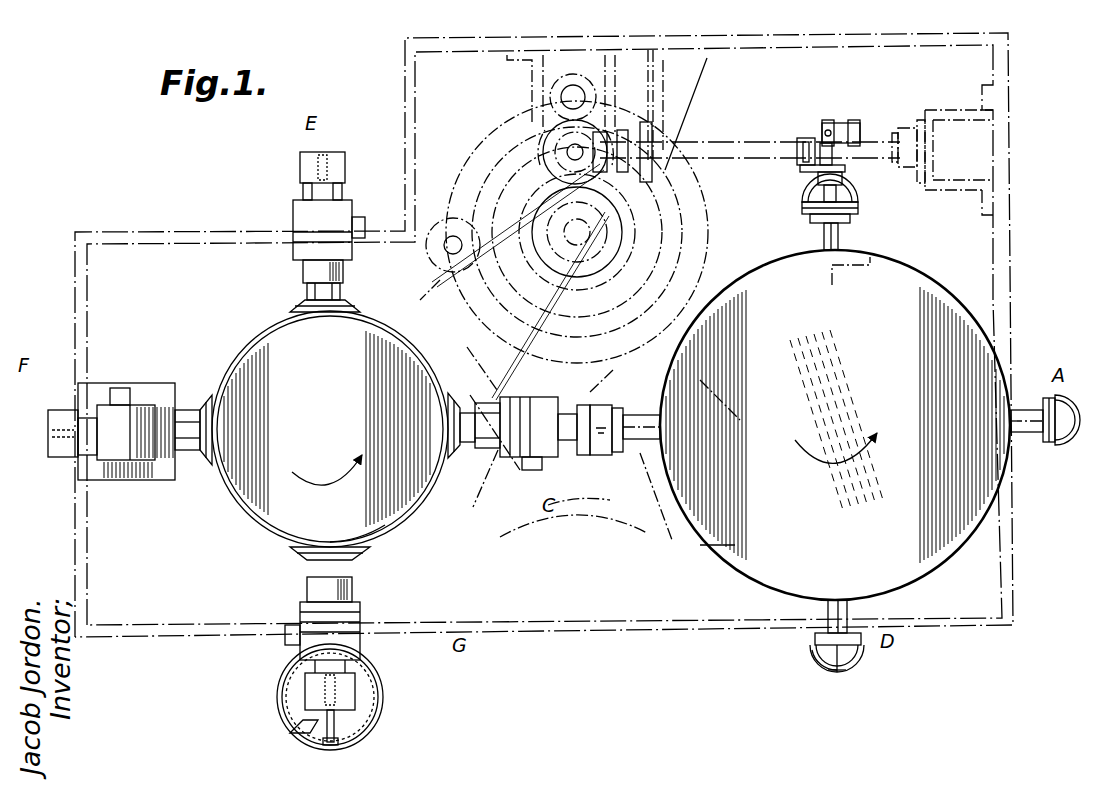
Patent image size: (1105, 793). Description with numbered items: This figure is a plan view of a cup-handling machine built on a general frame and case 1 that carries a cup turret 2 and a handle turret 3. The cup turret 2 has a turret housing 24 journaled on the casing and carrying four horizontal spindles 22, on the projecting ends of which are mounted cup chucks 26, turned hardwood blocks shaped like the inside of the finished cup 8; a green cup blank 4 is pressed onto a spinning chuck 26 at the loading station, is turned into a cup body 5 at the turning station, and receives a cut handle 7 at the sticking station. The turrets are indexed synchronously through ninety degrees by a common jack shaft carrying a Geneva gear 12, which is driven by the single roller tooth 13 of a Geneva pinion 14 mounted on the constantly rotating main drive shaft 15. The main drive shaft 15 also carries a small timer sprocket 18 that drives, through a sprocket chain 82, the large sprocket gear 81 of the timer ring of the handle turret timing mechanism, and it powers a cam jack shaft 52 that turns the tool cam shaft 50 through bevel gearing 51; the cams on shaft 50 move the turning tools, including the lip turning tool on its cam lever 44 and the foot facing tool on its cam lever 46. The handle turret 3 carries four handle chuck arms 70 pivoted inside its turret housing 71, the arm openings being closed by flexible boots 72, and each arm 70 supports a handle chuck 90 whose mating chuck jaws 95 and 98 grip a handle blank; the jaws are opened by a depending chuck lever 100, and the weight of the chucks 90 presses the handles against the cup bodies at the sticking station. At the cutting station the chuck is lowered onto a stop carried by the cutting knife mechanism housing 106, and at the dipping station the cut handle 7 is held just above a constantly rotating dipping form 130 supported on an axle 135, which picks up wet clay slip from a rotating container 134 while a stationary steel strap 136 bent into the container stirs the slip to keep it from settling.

The general frame and case 1 is at (1018, 560).
The cup turret 2 is at (20, 435).
The handle turret 3 is at (538, 365).
The cup blank 4 is at (848, 186).
The cup body 5 is at (598, 457).
The cut handle 7 is at (845, 670).
The finished cup 8 is at (812, 662).
The Geneva gear 12 is at (575, 510).
The single roller tooth 13 is at (575, 92).
The Geneva pinion 14 is at (700, 248).
The main drive shaft 15 is at (595, 240).
The small timer sprocket 18 is at (535, 262).
The spindle 22 is at (1022, 410).
The turret housing 24 is at (720, 545).
The cup chuck 26 is at (812, 218).
The cam lever 44 is at (868, 106).
The cam lever 46 is at (800, 162).
The tool cam shaft 50 is at (726, 145).
The bevel gearing 51 is at (632, 183).
The cam jack shaft 52 is at (548, 158).
The handle chuck arm 70 is at (307, 290).
The turret housing 71 is at (385, 525).
The flexible boot 72 is at (340, 305).
The large sprocket gear 81 is at (428, 355).
The sprocket chain 82 is at (560, 316).
The handle chuck 90 is at (294, 250).
The chuck jaw 95 is at (305, 160).
The chuck jaw 98 is at (338, 172).
The chuck lever 100 is at (360, 217).
The cutting knife mechanism housing 106 is at (130, 470).
The dipping form 130 is at (305, 700).
The rotating container 134 is at (378, 688).
The axle 135 is at (335, 718).
The stationary steel strap 136 is at (292, 732).